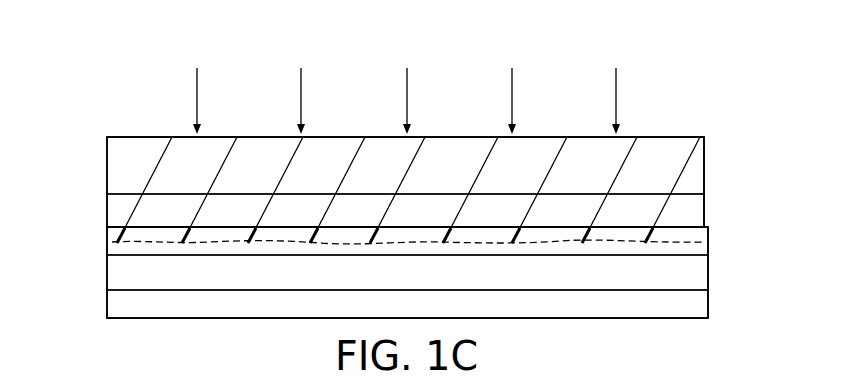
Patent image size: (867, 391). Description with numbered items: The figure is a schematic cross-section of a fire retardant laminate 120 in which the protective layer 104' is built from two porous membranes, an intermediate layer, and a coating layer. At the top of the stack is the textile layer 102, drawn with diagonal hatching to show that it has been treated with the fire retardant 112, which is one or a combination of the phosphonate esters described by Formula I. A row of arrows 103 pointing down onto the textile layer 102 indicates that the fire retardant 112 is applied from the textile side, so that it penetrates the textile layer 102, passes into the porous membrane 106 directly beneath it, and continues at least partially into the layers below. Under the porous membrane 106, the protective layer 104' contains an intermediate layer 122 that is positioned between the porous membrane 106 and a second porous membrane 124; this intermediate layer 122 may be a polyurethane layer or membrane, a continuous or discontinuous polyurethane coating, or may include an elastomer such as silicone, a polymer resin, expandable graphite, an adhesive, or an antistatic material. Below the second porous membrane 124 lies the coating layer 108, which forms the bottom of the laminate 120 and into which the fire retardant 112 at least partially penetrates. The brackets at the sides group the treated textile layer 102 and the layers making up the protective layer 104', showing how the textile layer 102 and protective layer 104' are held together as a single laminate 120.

The laminate 120 is at (105, 79).
The fire retardant 112 is at (88, 232).
The textile layer 102 is at (717, 197).
The porous membrane 106 is at (107, 205).
The protective layer 104' is at (453, 258).
The intermediate layer 122 is at (107, 245).
The porous membrane 124 is at (107, 278).
The coating layer 108 is at (107, 307).
The arrows 103 is at (199, 88).